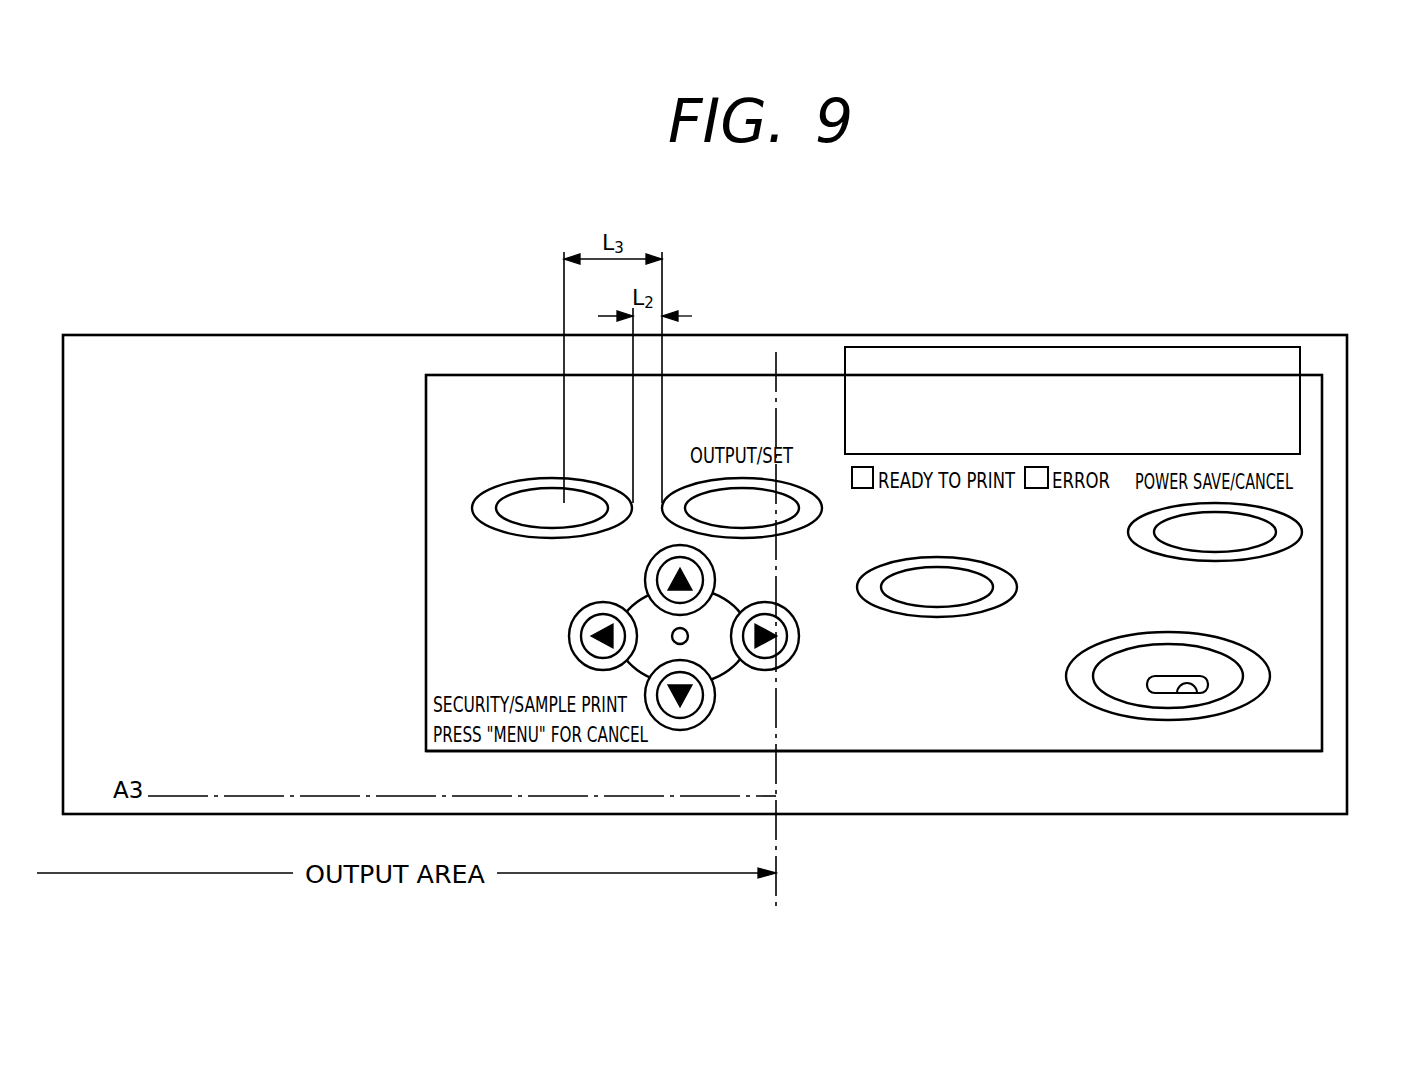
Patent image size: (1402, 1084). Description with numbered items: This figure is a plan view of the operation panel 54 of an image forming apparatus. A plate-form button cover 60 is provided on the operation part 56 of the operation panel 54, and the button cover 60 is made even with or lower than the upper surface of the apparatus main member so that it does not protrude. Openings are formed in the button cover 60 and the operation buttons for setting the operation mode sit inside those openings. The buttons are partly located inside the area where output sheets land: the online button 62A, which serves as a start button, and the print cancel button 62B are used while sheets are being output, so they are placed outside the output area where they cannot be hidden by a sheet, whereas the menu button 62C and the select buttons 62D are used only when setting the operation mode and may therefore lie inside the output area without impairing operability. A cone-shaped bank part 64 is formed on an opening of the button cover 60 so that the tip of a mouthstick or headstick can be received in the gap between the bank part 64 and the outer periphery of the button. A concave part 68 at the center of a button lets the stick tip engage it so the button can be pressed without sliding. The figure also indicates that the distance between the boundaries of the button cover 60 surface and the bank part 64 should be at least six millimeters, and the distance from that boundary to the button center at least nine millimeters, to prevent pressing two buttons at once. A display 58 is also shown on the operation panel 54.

The operation panel 54 is at (1112, 262).
The operation part 56 is at (796, 375).
The display 58 is at (1228, 356).
The button cover 60 is at (1107, 745).
The online button 62A is at (910, 598).
The print cancel button 62B is at (1117, 683).
The menu button 62C is at (538, 522).
The select buttons 62D is at (665, 580).
The bank part 64 is at (480, 506).
The concave part 68 is at (1192, 692).